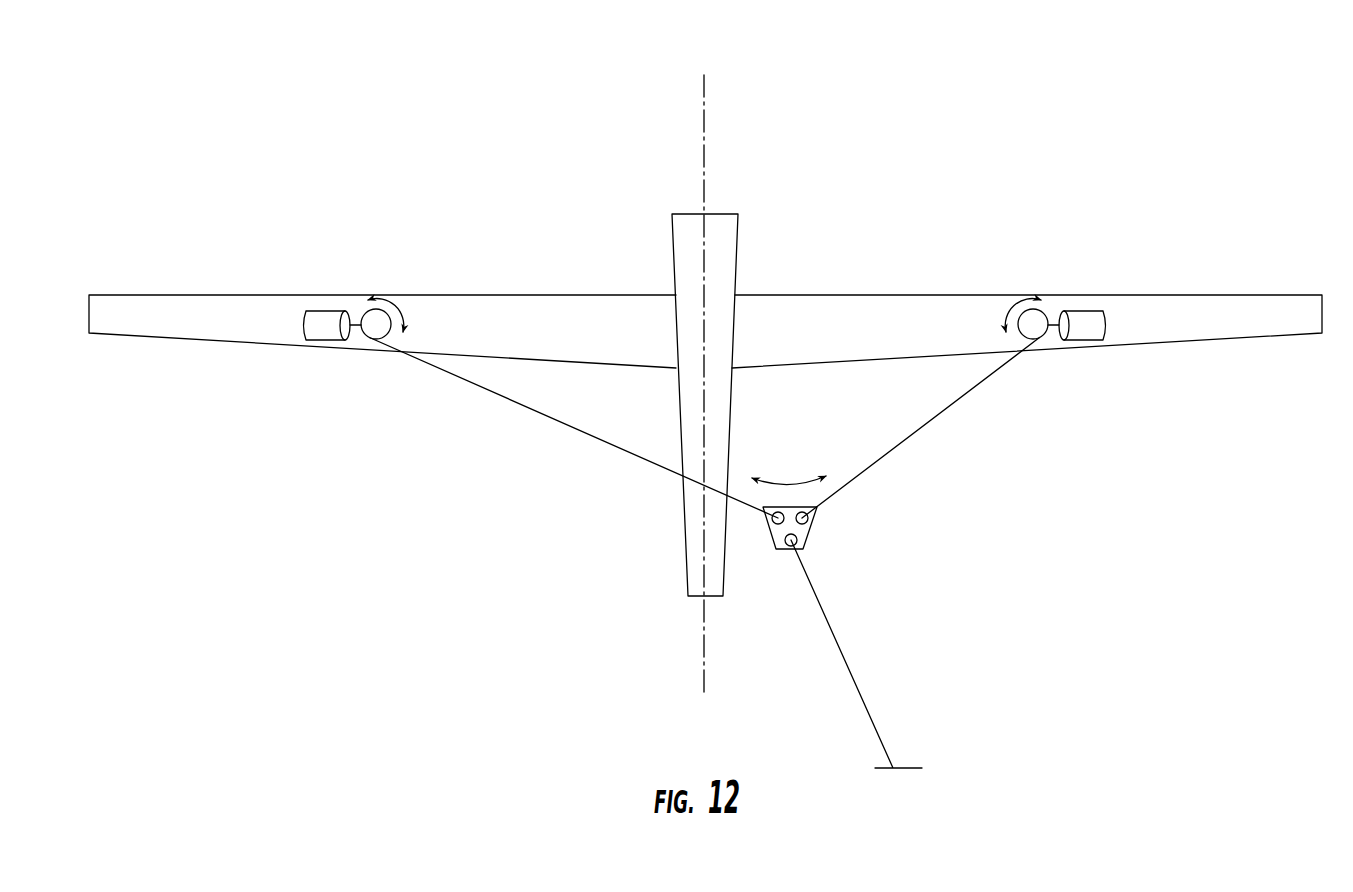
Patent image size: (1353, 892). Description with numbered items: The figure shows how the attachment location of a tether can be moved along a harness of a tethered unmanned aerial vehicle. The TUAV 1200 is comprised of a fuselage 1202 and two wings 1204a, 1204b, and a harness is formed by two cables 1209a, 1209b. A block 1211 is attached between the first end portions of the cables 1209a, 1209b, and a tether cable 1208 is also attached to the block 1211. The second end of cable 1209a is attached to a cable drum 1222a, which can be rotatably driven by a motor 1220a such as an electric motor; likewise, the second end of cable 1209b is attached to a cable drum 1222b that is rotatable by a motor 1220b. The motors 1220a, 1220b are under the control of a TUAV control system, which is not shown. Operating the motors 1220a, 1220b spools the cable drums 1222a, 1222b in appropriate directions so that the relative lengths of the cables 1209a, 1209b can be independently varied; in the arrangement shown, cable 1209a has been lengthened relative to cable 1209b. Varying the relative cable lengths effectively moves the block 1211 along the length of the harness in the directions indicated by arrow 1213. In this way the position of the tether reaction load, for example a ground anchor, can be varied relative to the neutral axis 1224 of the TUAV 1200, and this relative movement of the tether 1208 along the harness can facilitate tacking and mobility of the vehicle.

The TUAV 1200 is at (356, 209).
The fuselage 1202 is at (680, 253).
The wing 1204a is at (226, 333).
The wing 1204b is at (1151, 335).
The tether cable 1208 is at (845, 663).
The cable 1209a is at (597, 440).
The cable 1209b is at (893, 452).
The block 1211 is at (812, 535).
The arrow 1213 is at (791, 484).
The motor 1220a is at (316, 340).
The motor 1220b is at (1085, 340).
The cable drum 1222a is at (361, 338).
The cable drum 1222b is at (1047, 337).
The neutral axis 1224 is at (703, 155).